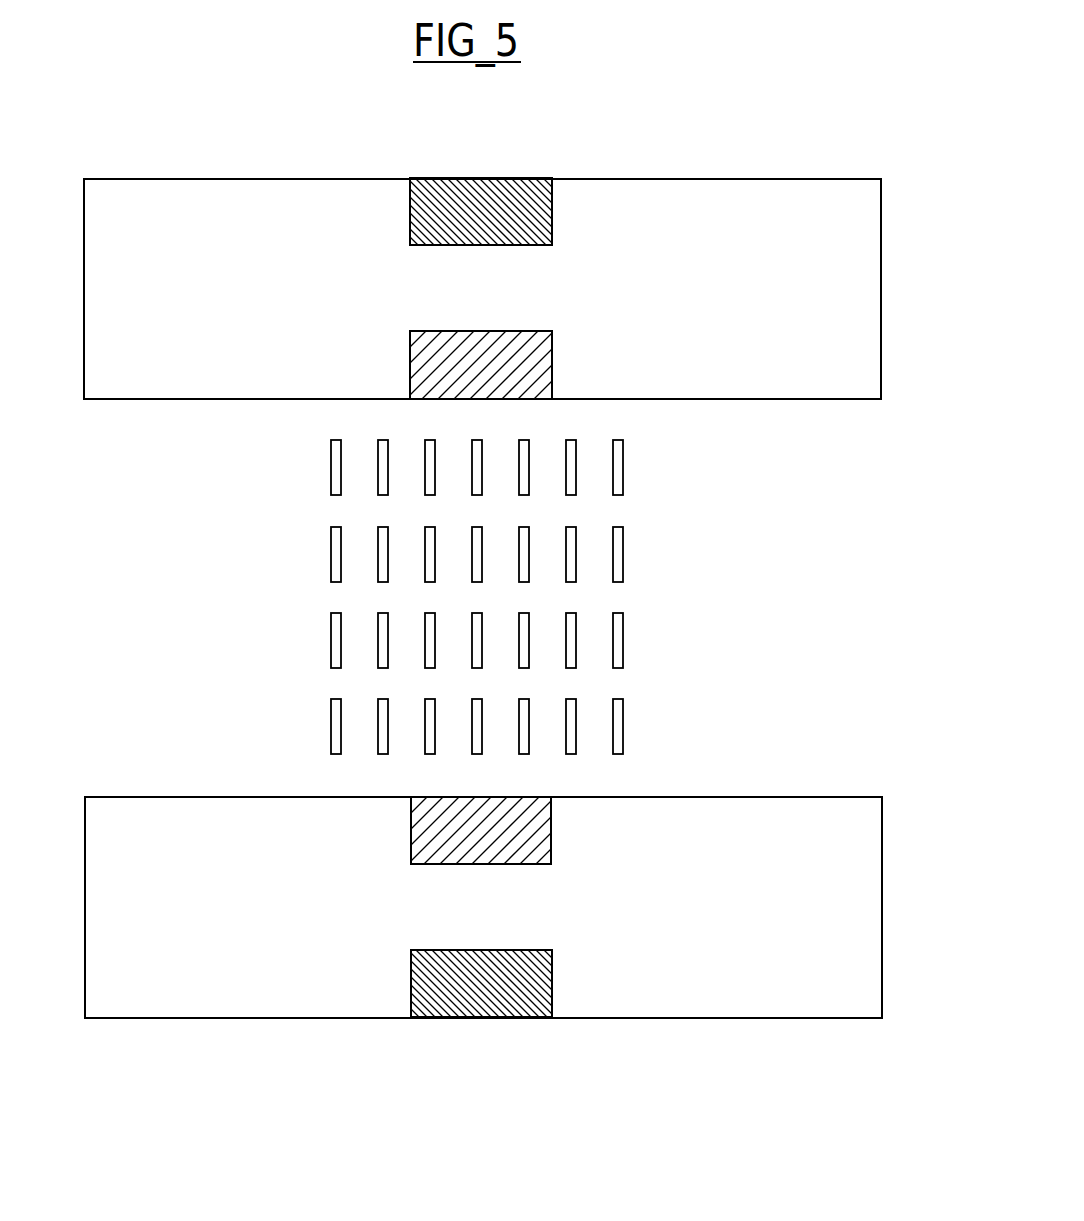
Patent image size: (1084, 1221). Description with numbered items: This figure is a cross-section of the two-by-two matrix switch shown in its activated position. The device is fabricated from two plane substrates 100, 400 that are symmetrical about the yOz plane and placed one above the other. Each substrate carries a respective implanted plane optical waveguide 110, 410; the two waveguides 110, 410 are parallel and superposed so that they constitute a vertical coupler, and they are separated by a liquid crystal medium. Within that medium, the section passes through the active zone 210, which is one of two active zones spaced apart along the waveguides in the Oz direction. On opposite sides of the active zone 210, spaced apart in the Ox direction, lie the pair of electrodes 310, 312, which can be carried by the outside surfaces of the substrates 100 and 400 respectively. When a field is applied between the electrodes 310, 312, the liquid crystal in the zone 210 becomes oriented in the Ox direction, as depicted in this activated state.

The plane substrate 100 is at (737, 823).
The plane optical waveguide 110 is at (533, 822).
The active zone 210 is at (645, 549).
The electrode 310 is at (478, 202).
The electrode 312 is at (512, 988).
The plane substrate 400 is at (717, 202).
The plane optical waveguide 410 is at (532, 350).